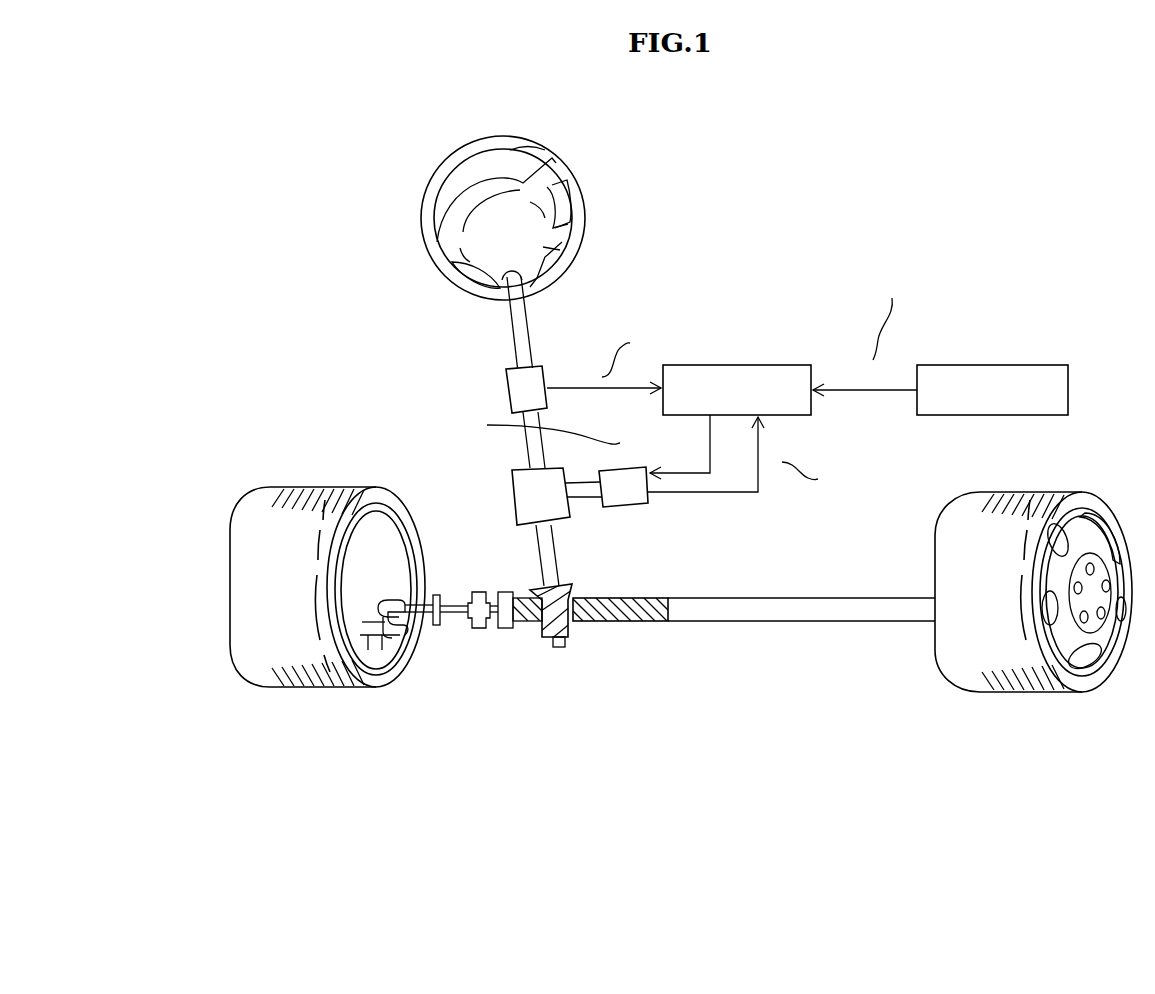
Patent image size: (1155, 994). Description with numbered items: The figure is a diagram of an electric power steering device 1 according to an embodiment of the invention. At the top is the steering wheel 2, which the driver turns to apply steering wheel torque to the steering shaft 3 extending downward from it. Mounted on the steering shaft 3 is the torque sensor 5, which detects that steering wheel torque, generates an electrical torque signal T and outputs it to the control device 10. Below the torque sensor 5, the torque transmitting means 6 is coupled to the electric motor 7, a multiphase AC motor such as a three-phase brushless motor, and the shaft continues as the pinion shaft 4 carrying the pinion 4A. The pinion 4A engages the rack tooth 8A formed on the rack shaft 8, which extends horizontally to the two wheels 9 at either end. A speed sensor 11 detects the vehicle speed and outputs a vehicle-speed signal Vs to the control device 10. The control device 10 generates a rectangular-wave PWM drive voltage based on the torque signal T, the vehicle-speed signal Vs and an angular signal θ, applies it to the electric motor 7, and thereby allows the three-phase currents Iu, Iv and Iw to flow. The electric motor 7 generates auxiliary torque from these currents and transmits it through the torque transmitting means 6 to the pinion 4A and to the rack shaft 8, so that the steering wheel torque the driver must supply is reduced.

The electric power steering device 1 is at (1085, 159).
The steering wheel 2 is at (428, 230).
The steering shaft 3 is at (523, 335).
The pinion shaft 4 is at (550, 553).
The pinion 4A is at (571, 627).
The torque sensor 5 is at (520, 397).
The torque transmitting means 6 is at (520, 493).
The electric motor 7 is at (634, 496).
The rack shaft 8 is at (785, 613).
The rack tooth 8A is at (618, 620).
The wheels 9 is at (323, 690).
The control device 10 is at (775, 365).
The speed sensor 11 is at (993, 365).